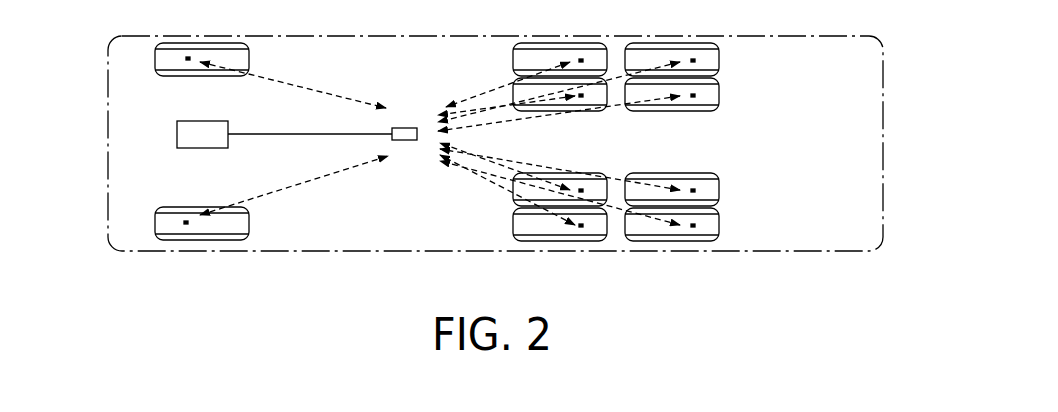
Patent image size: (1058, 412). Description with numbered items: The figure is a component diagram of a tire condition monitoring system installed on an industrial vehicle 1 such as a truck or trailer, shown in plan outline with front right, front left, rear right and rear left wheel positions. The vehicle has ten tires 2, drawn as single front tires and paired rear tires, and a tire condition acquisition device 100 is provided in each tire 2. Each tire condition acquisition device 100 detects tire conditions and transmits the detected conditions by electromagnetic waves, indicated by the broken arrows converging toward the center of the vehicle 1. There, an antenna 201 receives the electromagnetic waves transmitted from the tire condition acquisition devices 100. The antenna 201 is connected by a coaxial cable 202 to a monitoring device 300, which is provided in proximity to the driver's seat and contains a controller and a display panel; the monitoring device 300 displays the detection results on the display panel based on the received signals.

The industrial vehicle 1 is at (400, 36).
The tire 2 is at (228, 43).
The tire condition acquisition device 100 is at (186, 52).
The antenna 201 is at (404, 141).
The coaxial cable 202 is at (272, 134).
The monitoring device 300 is at (200, 148).